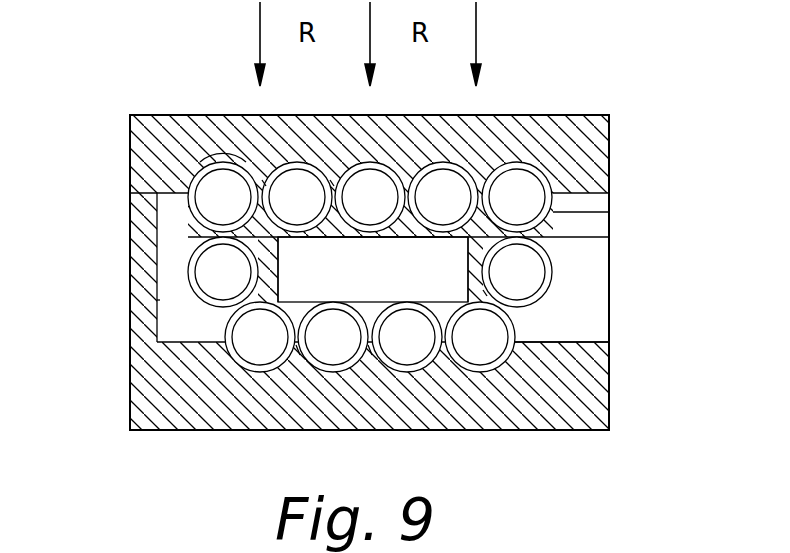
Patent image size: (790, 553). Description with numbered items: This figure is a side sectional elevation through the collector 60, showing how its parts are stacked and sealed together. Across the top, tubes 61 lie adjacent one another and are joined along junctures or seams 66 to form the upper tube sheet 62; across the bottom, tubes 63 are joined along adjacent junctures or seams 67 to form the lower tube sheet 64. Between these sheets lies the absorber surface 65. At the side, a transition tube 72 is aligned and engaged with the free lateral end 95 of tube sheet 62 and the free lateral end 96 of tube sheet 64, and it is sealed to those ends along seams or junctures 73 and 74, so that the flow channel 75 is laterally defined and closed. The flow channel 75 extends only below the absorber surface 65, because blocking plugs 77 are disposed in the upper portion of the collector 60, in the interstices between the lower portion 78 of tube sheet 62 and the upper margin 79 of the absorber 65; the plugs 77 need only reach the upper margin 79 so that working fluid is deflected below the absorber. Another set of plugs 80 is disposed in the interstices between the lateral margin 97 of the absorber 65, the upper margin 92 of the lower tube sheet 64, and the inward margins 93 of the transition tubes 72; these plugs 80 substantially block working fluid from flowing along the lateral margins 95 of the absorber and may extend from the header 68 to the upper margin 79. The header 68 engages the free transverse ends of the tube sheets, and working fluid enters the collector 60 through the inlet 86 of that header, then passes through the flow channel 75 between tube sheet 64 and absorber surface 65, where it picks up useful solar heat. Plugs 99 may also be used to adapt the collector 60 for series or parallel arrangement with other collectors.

The collector 60 is at (583, 79).
The tubes 61 is at (210, 208).
The tube sheet 62 is at (227, 162).
The tubes 63 is at (249, 352).
The tube sheet 64 is at (252, 373).
The absorber surface 65 is at (372, 285).
The junctures or seams 66 is at (264, 178).
The junctures or seams 67 is at (298, 360).
The header 68 is at (609, 143).
The transition tubes 72 is at (209, 284).
The seam or juncture 73 is at (193, 237).
The seam or juncture 74 is at (224, 319).
The flow channel 75 is at (333, 337).
The blocking plugs 77 is at (403, 228).
The lower portion of tube sheet 78 is at (477, 226).
The upper margin of absorber 79 is at (398, 238).
The plugs 80 is at (278, 253).
The inlet 86 is at (609, 299).
The upper margin of lower tube sheet 92 is at (488, 302).
The inward margins of transition tubes 93 is at (490, 251).
The free lateral end 95 is at (193, 216).
The free lateral end 96 is at (230, 332).
The lateral margin of absorber 97 is at (487, 294).
The plugs 99 is at (138, 288).